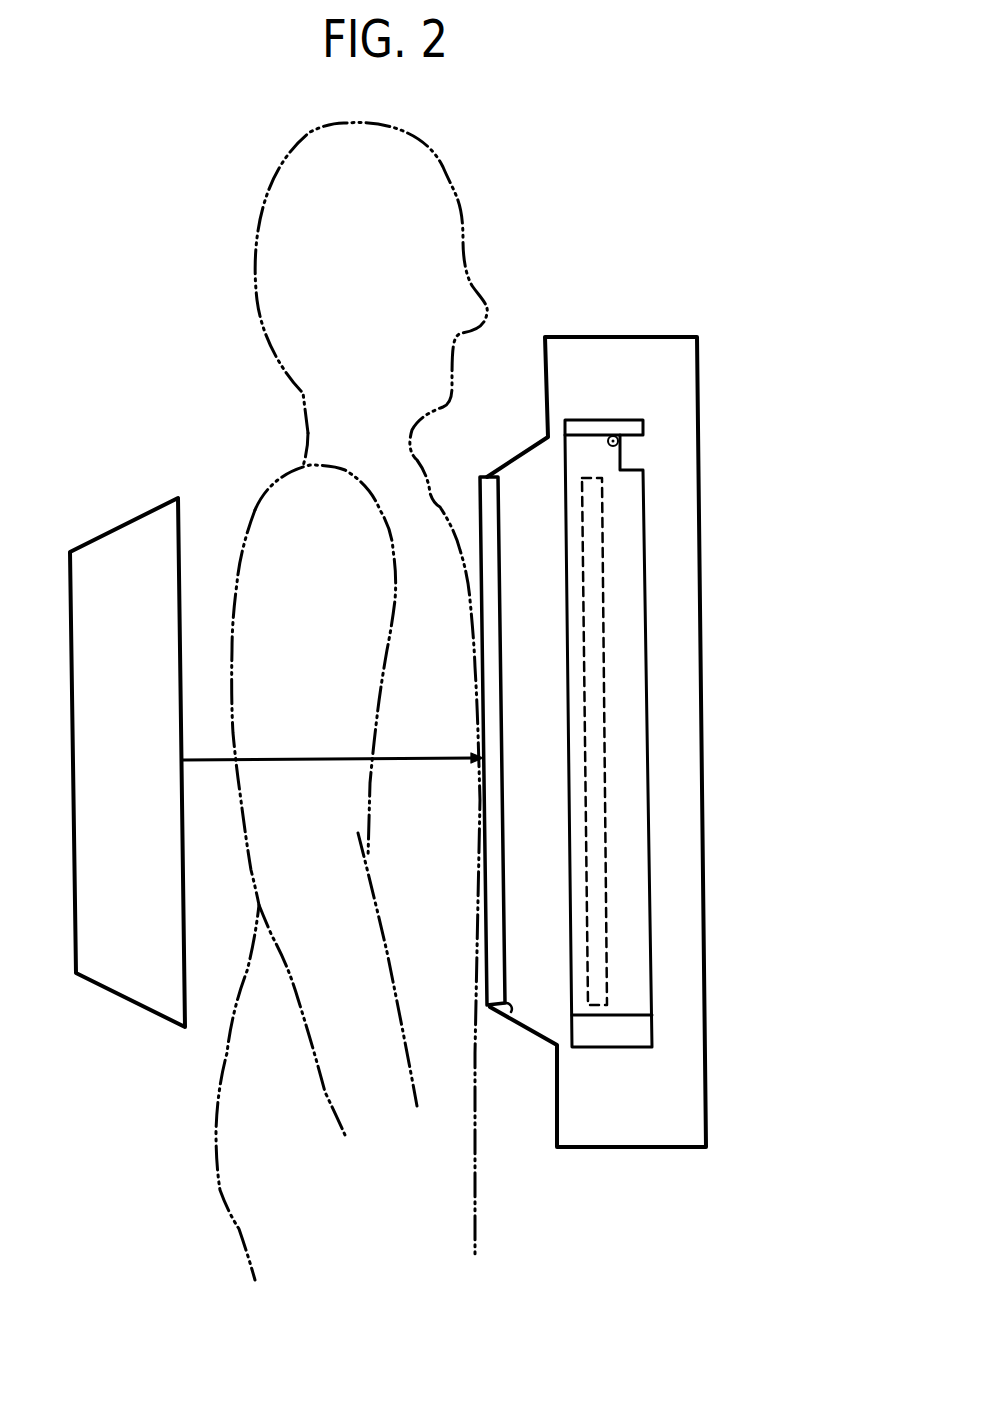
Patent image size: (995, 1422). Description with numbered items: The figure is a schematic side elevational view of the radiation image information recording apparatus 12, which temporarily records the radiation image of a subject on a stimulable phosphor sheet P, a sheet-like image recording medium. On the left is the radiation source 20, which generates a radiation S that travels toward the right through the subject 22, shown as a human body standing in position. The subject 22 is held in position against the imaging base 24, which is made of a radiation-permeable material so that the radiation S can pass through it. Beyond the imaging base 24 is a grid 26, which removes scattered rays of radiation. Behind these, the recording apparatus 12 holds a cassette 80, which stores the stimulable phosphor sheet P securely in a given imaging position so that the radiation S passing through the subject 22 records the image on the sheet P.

The radiation image information recording apparatus 12 is at (550, 271).
The radiation source 20 is at (123, 538).
The subject 22 is at (262, 497).
The imaging base 24 is at (478, 498).
The grid 26 is at (512, 1023).
The cassette 80 is at (650, 567).
The radiation S is at (210, 758).
The stimulable phosphor sheet P is at (597, 748).